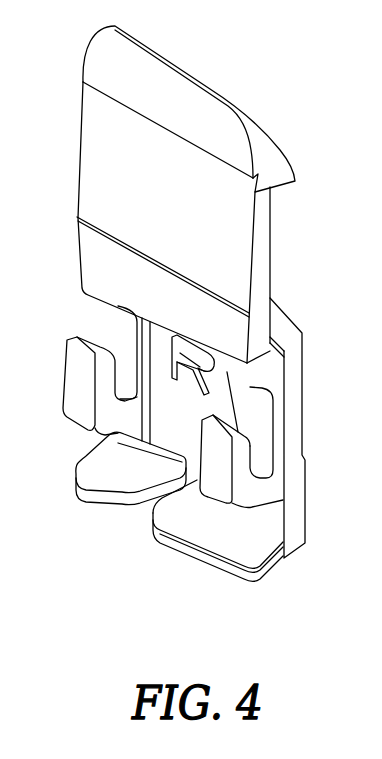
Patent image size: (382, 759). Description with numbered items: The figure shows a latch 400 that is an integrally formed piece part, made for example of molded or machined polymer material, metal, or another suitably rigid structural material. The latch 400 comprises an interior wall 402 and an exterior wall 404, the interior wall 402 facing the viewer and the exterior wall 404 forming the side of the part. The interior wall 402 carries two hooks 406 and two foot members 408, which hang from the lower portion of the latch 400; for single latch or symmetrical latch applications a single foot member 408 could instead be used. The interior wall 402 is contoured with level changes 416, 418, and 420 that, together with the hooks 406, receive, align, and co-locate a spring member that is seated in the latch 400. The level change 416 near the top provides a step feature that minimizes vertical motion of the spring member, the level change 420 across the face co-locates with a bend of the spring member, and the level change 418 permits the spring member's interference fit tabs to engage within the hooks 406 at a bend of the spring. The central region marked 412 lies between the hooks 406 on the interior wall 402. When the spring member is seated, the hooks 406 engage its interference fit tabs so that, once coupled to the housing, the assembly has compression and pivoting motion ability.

The latch 400 is at (349, 89).
The interior wall 402 is at (88, 187).
The exterior wall 404 is at (270, 284).
The hooks 406 is at (72, 404).
The foot members 408 is at (109, 511).
The central rib 412 is at (167, 402).
The level change 416 is at (167, 138).
The level change 418 is at (250, 388).
The level change 420 is at (78, 218).